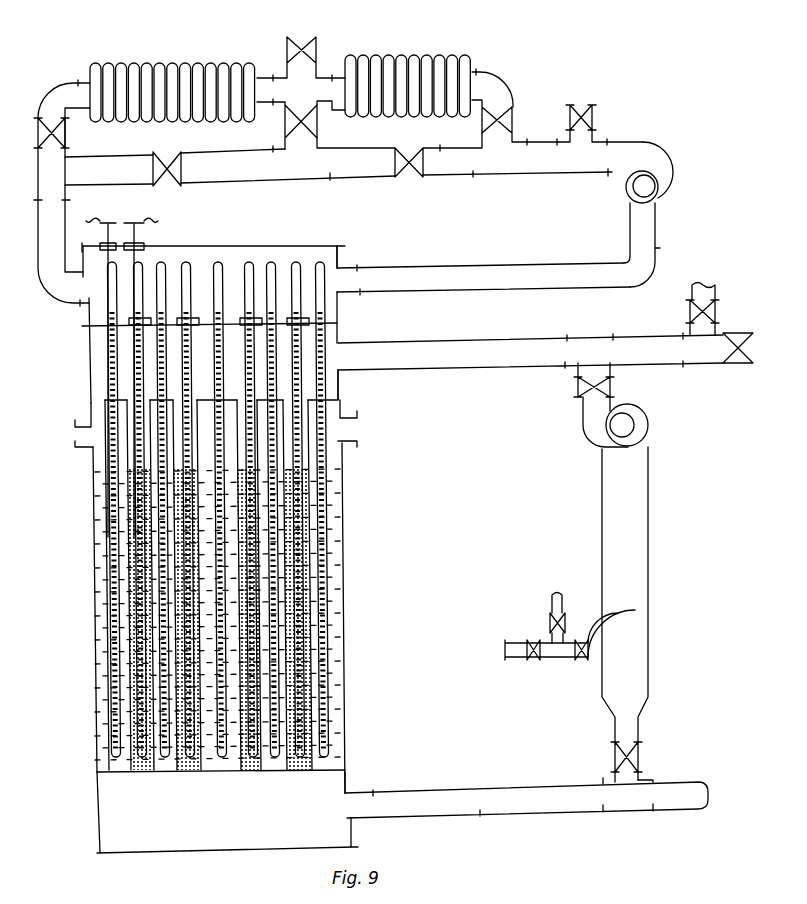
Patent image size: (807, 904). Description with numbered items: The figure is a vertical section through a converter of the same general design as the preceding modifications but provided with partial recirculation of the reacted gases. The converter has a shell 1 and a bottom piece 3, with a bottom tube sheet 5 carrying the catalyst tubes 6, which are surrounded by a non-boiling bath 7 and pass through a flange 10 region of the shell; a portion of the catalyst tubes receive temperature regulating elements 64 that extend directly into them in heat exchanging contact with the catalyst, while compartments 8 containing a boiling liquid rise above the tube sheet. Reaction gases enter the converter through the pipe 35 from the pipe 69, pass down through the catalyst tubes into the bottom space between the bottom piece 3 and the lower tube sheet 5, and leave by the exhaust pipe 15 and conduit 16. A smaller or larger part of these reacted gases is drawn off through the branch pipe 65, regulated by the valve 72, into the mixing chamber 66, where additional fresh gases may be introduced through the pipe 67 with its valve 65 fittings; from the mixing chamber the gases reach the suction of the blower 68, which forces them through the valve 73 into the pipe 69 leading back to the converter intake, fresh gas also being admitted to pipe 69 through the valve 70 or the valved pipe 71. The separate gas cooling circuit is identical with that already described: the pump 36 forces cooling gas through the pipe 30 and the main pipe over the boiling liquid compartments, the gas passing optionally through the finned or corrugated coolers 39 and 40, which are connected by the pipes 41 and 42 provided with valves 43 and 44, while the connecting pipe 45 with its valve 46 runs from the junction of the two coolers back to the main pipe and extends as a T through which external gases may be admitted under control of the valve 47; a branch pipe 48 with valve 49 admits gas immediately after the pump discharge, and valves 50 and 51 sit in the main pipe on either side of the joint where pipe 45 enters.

The shell 1 is at (342, 526).
The bottom piece 3 is at (229, 848).
The bottom tube sheet 5 is at (346, 773).
The catalyst tubes 6 is at (310, 668).
The non-boiling bath 7 is at (333, 598).
The compartments 8 is at (324, 264).
The vent pipes 10 is at (350, 428).
The exhaust pipe 15 is at (357, 802).
The discharge conduit 16 is at (528, 808).
The pipe 30 is at (38, 240).
The pipe 35 is at (350, 362).
The pump 36 is at (646, 187).
The finned or corrugated pipe 39 is at (393, 63).
The finned or corrugated pipe 40 is at (161, 64).
The pipe 41 is at (505, 88).
The pipe 42 is at (53, 92).
The valve 43 is at (513, 117).
The valve 44 is at (36, 133).
The connecting pipe 45 is at (332, 115).
The valve 46 is at (285, 125).
The valve 47 is at (314, 52).
The branch pipe 48 is at (595, 140).
The valve 49 is at (577, 108).
The valve 50 is at (412, 177).
The valve 51 is at (168, 153).
The temperature regulating elements 64 is at (141, 266).
The branch pipe 65 is at (643, 778).
The mixing chamber 66 is at (648, 565).
The pipe 67 is at (594, 635).
The blower 68 is at (628, 425).
The pipe 69 is at (503, 343).
The valve 70 is at (742, 360).
The valved pipe 71 is at (712, 325).
The valve 72 is at (614, 753).
The valve 73 is at (577, 390).